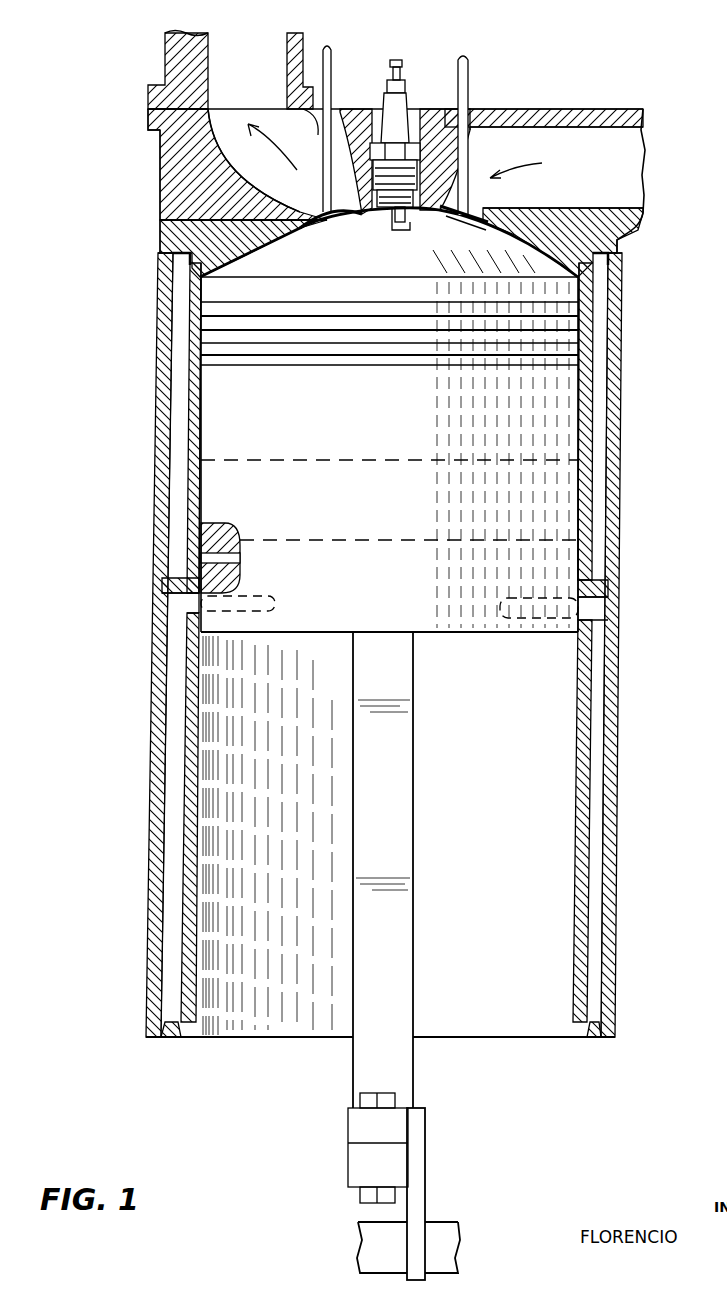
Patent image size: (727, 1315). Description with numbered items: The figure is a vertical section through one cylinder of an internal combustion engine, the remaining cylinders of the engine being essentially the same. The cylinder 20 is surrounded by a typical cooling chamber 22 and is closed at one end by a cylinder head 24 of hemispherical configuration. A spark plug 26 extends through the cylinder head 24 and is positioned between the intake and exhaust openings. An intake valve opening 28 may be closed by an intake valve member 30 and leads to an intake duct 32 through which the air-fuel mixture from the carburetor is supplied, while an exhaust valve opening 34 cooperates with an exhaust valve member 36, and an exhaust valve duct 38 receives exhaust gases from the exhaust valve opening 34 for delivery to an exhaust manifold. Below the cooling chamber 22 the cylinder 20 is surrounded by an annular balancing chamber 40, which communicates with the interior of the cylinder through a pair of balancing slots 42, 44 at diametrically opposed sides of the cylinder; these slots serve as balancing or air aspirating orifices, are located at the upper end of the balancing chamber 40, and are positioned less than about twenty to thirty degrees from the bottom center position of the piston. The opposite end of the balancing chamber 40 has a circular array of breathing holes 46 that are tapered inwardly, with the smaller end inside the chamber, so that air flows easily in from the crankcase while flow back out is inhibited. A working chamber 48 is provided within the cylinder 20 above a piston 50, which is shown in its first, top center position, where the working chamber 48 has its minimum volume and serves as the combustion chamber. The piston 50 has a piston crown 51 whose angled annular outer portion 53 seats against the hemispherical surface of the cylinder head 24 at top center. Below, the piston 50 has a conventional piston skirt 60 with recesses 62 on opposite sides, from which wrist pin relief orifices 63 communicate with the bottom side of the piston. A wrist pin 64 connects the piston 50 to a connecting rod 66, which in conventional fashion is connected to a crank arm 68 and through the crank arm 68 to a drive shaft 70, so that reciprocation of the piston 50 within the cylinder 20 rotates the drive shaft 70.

The cylinder 20 is at (200, 365).
The cooling chamber 22 is at (182, 318).
The cylinder head 24 is at (210, 233).
The spark plug 26 is at (397, 110).
The intake valve opening 28 is at (490, 236).
The intake valve member 30 is at (478, 212).
The intake duct 32 is at (625, 175).
The exhaust valve opening 34 is at (325, 225).
The exhaust valve member 36 is at (308, 183).
The exhaust valve duct 38 is at (223, 130).
The annular balancing chamber 40 is at (175, 722).
The balancing slot 42 is at (190, 603).
The balancing slot 44 is at (585, 608).
The breathing holes 46 is at (170, 1030).
The working chamber 48 is at (370, 107).
The piston 50 is at (562, 325).
The piston crown 51 is at (603, 263).
The angled annular outer portion 53 is at (188, 262).
The piston skirt 60 is at (557, 500).
The recesses 62 is at (202, 472).
The wrist pin relief orifices 63 is at (215, 555).
The wrist pin 64 is at (420, 490).
The connecting rod 66 is at (393, 847).
The crank arm 68 is at (425, 1168).
The drive shaft 70 is at (382, 1233).